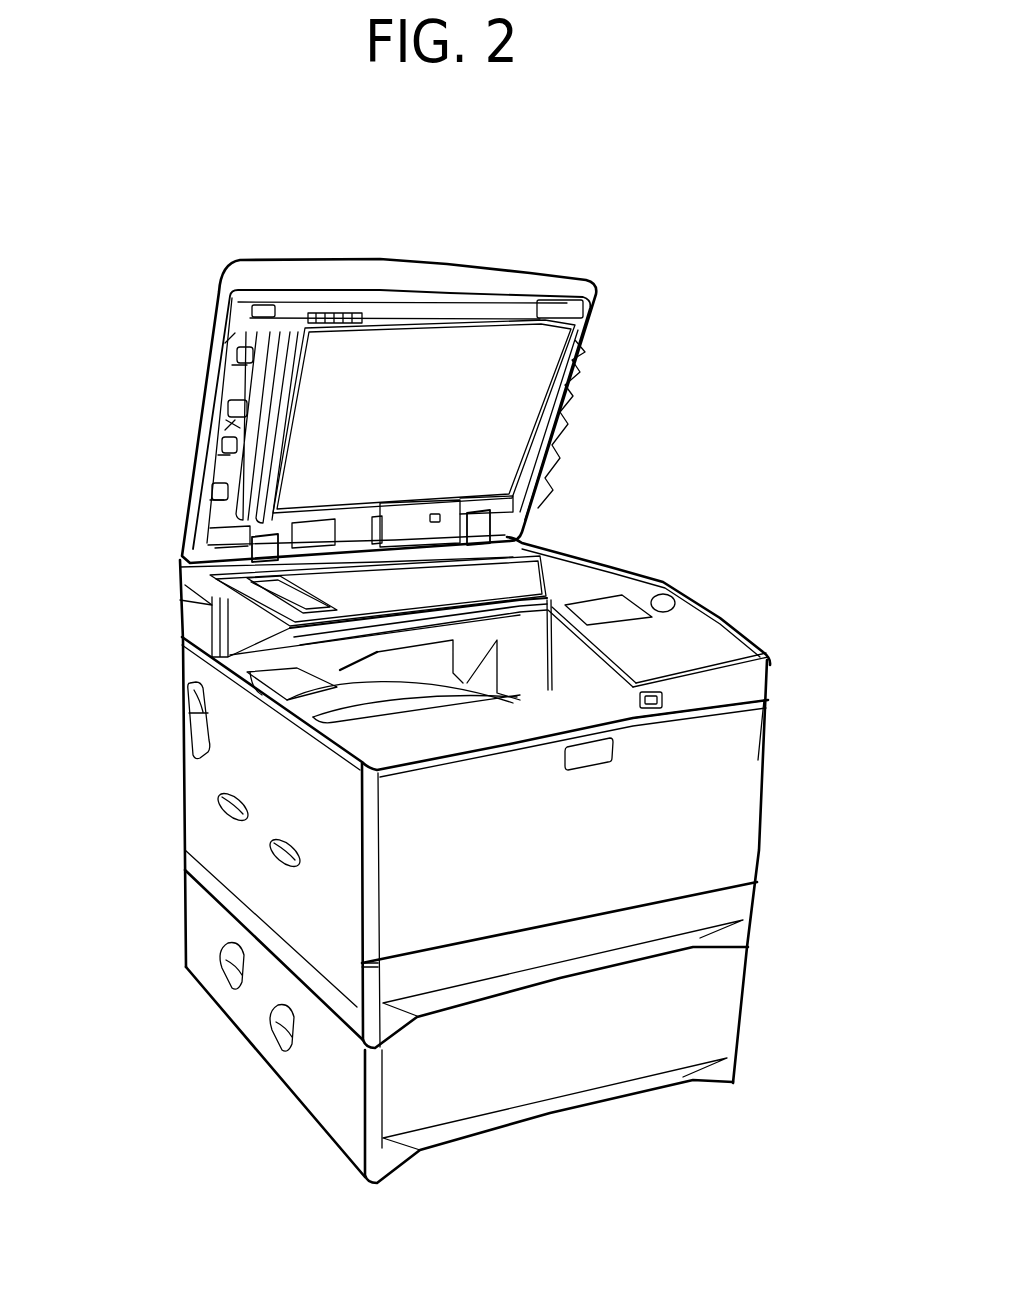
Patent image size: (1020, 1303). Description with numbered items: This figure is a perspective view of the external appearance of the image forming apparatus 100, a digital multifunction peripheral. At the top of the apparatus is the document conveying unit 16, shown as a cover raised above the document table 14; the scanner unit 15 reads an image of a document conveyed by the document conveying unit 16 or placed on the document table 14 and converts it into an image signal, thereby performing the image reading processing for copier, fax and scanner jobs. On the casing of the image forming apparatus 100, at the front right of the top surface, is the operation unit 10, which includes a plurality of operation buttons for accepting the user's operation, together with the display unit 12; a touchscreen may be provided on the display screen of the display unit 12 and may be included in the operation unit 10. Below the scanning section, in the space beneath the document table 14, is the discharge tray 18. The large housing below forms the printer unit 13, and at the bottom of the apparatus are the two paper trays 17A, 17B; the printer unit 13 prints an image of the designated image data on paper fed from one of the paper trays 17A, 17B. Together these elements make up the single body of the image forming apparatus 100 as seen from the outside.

The image forming apparatus 100 is at (712, 218).
The operation unit 10 is at (687, 613).
The display unit 12 is at (613, 613).
The printer unit 13 is at (735, 750).
The document table 14 is at (525, 563).
The scanner unit 15 is at (185, 585).
The document conveying unit 16 is at (533, 272).
The paper tray 17A is at (735, 910).
The paper tray 17B is at (735, 997).
The discharge tray 18 is at (182, 633).